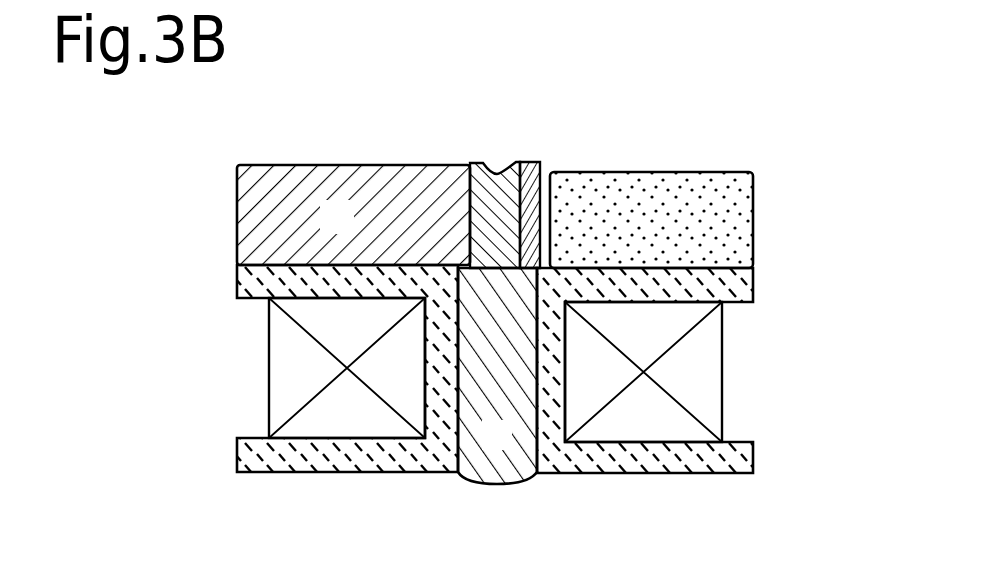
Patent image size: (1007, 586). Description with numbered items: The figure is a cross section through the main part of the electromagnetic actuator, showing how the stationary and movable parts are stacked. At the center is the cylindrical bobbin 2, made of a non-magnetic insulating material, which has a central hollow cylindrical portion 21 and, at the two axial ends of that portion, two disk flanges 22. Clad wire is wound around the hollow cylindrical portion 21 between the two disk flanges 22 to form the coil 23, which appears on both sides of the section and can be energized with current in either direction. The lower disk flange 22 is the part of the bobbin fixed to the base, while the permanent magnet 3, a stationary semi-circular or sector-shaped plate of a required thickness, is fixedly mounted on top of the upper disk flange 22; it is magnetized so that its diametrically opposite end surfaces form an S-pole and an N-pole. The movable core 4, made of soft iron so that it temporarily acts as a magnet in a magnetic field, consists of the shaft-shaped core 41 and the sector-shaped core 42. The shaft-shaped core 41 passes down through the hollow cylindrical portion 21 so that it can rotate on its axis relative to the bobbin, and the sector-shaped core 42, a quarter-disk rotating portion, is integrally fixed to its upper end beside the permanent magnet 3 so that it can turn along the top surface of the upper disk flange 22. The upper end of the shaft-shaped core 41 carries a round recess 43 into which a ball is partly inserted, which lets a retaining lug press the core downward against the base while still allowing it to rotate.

The cylindrical bobbin 2 is at (700, 477).
The disk flange 22 is at (736, 454).
The hollow cylindrical portion 21 is at (438, 403).
The coil 23 is at (637, 413).
The shaft-shaped core 41 is at (498, 262).
The round recess 43 is at (497, 165).
The movable core 4 is at (237, 200).
The sector-shaped core 42 is at (318, 192).
The permanent magnet 3 is at (735, 212).